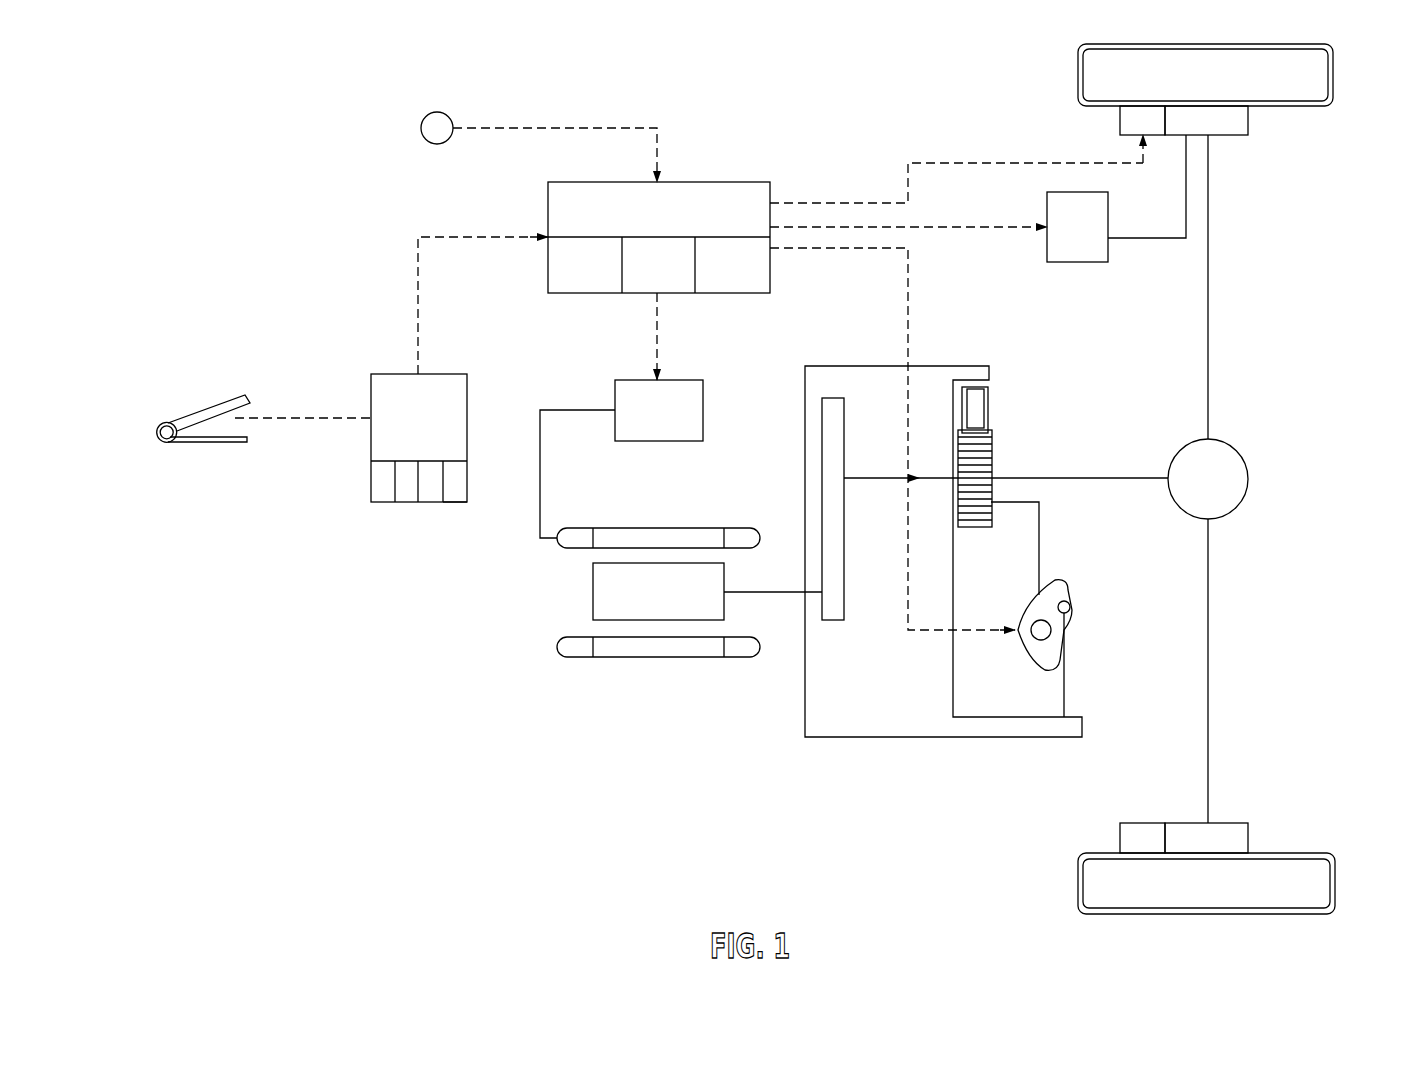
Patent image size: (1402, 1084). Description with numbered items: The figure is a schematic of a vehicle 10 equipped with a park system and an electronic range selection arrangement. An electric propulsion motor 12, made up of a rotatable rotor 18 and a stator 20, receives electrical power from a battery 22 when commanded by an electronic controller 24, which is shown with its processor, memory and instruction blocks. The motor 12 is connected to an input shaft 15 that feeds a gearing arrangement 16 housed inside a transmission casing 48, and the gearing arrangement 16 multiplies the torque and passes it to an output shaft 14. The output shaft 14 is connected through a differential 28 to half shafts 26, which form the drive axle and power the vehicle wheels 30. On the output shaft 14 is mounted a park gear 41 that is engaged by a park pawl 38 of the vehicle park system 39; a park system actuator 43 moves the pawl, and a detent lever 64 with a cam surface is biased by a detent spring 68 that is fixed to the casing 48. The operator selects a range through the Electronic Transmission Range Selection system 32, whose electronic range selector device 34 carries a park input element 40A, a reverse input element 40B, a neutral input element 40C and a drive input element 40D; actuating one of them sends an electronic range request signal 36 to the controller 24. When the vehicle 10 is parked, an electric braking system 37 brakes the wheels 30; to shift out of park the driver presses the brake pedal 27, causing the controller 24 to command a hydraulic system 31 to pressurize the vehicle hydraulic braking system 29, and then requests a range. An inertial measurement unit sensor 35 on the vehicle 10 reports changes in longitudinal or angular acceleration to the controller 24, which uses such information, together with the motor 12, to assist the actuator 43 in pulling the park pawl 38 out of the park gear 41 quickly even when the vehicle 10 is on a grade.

The vehicle 10 is at (148, 93).
The electric propulsion motor 12 is at (558, 620).
The output shaft 14 is at (1134, 475).
The input shaft 15 is at (763, 593).
The gearing arrangement 16 is at (848, 539).
The rotor 18 is at (607, 598).
The stator 20 is at (658, 658).
The battery 22 is at (628, 395).
The electronic controller 24 is at (713, 199).
The half shafts 26 is at (1211, 377).
The brake pedal 27 is at (203, 410).
The differential 28 is at (1248, 477).
The vehicle hydraulic braking system 29 is at (1222, 123).
The vehicle wheels 30 is at (1320, 77).
The hydraulic system 31 is at (1060, 240).
The Electronic Transmission Range Selection (ETRS) system 32 is at (363, 445).
The electronic range selector device 34 is at (370, 392).
The inertial measurement unit sensor 35 is at (437, 112).
The electronic range request signal 36 is at (460, 237).
The electric braking system (EPB) 37 is at (1147, 125).
The park pawl 38 is at (989, 411).
The vehicle park system 39 is at (1022, 488).
The park input element 40A is at (377, 488).
The reverse input element 40B is at (412, 493).
The neutral input element 40C is at (435, 487).
The drive input element 40D is at (455, 492).
The park gear 41 is at (991, 462).
The park system actuator 43 is at (1035, 635).
The transmission casing 48 is at (901, 739).
The detent lever 64 is at (1046, 664).
The detent spring 68 is at (1064, 689).